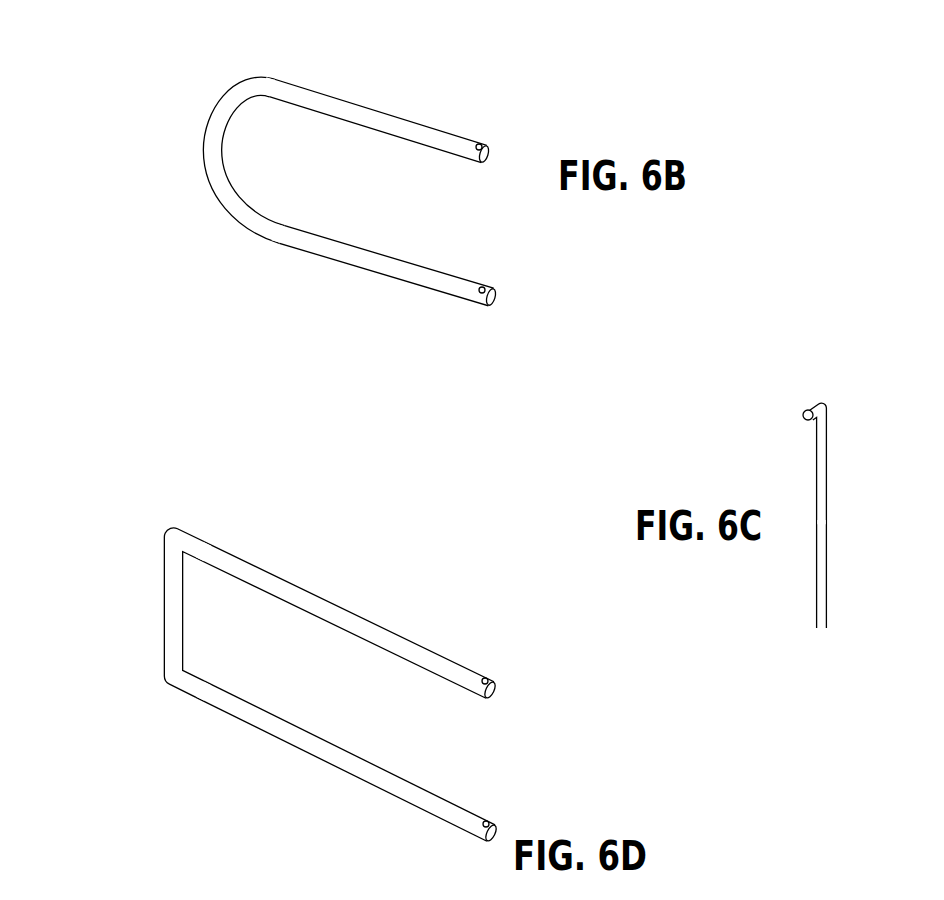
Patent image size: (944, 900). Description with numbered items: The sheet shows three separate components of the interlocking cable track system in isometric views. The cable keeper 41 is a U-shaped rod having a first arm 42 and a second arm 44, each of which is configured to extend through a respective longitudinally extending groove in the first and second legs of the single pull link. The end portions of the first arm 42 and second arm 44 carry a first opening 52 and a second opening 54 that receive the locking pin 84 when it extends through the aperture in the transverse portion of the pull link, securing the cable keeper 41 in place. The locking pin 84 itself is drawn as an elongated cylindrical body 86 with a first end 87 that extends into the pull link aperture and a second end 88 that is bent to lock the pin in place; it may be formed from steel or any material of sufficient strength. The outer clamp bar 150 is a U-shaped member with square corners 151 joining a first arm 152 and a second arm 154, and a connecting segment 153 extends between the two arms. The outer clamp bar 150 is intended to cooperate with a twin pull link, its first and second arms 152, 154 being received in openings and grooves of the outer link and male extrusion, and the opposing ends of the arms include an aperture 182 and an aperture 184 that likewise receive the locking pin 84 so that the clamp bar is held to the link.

In FIG. 6B, the cable keeper 41 is at (322, 161).
In FIG. 6B, the first arm 42 is at (404, 90).
In FIG. 6B, the second arm 44 is at (392, 263).
In FIG. 6B, the first opening 52 is at (481, 146).
In FIG. 6B, the second opening 54 is at (481, 290).
In FIG. 6C, the locking pin 84 is at (822, 480).
In FIG. 6C, the elongated cylindrical body 86 is at (818, 488).
In FIG. 6C, the first end 87 is at (822, 578).
In FIG. 6C, the second end 88 is at (808, 409).
In FIG. 6D, the outer clamp bar 150 is at (323, 629).
In FIG. 6D, the square corners 151 is at (172, 527).
In FIG. 6D, the first arm 152 is at (379, 618).
In FIG. 6D, the connecting segment 153 is at (172, 607).
In FIG. 6D, the second arm 154 is at (379, 765).
In FIG. 6D, the aperture 182 is at (486, 681).
In FIG. 6D, the aperture 184 is at (489, 825).